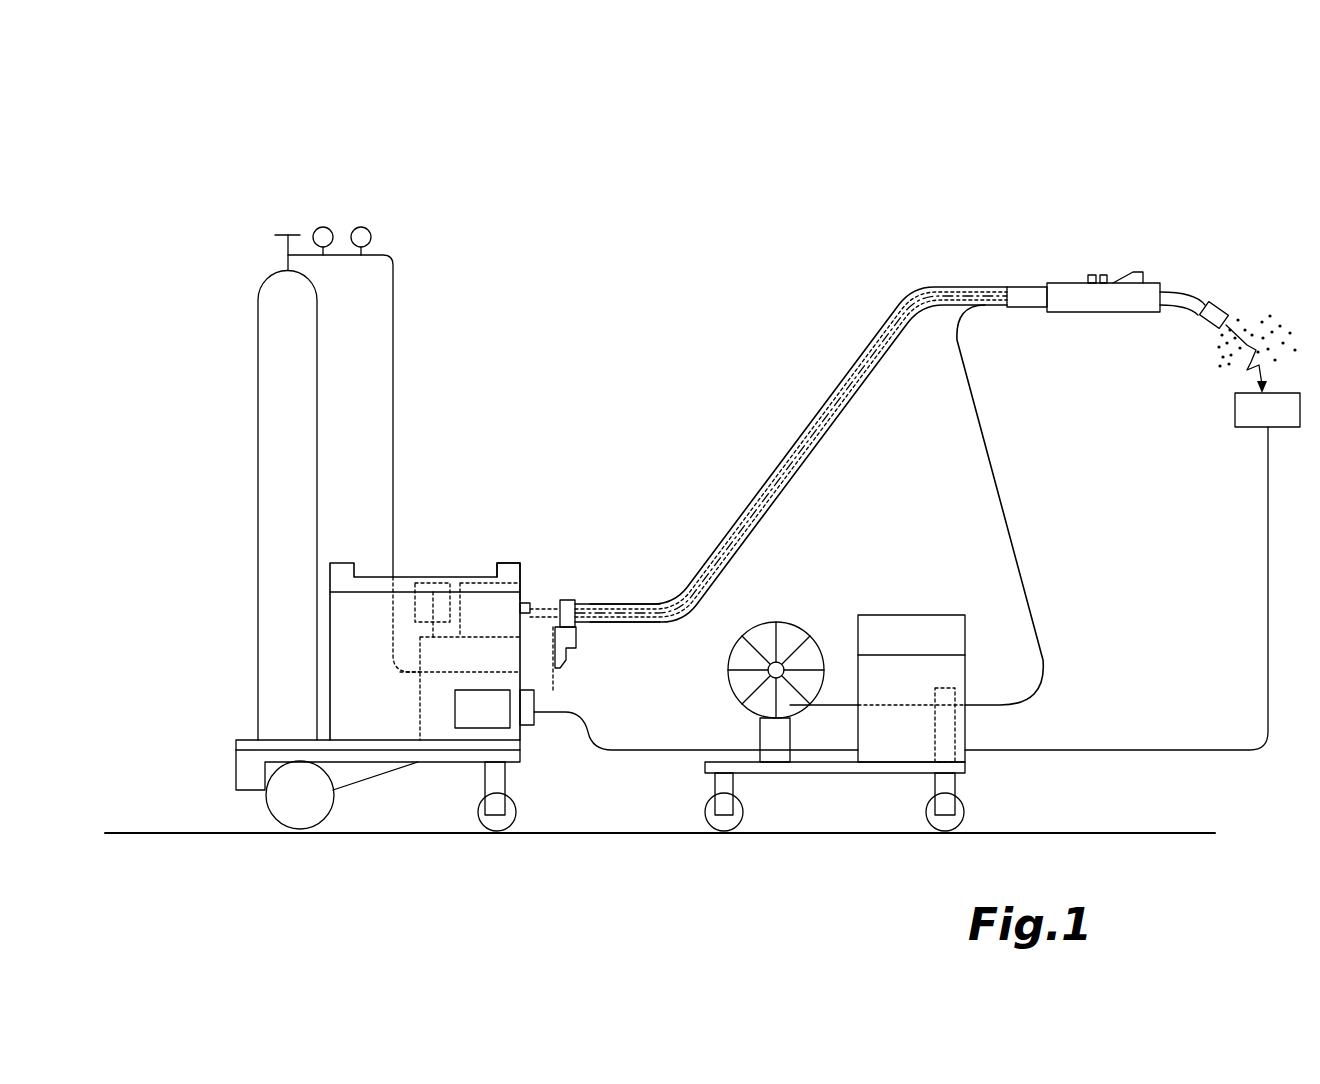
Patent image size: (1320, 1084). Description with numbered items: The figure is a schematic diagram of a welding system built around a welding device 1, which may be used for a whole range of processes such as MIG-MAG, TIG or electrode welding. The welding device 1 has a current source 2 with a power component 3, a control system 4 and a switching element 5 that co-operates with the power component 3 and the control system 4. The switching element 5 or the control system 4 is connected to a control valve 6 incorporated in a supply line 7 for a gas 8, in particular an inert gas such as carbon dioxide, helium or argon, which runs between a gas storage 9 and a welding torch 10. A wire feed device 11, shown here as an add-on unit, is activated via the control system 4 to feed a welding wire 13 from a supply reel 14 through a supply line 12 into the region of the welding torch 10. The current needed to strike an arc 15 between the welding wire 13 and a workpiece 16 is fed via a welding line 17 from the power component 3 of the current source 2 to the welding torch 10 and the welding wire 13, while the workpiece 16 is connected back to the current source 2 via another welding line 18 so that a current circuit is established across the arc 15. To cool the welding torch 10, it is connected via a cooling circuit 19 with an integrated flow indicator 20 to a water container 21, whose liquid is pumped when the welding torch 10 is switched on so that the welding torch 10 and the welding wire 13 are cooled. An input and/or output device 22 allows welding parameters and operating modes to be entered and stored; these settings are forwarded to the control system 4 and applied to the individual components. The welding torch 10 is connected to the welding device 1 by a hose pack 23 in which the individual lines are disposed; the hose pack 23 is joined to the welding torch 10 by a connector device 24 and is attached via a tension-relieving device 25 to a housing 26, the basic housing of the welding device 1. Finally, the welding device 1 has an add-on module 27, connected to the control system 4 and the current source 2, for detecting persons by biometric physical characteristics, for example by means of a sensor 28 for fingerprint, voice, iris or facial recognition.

The welding device 1 is at (192, 217).
The current source 2 is at (362, 603).
The power component 3 is at (473, 715).
The control system 4 is at (421, 705).
The switching element 5 is at (536, 740).
The control valve 6 is at (542, 697).
The supply line 7 is at (936, 302).
The gas 8 is at (1237, 294).
The gas storage 9 is at (283, 348).
The welding torch 10 is at (1150, 253).
The wire feed device 11 is at (942, 662).
The supply line 12 is at (1010, 525).
The welding wire 13 is at (1247, 333).
The supply reel 14 is at (787, 625).
The arc 15 is at (1240, 377).
The workpiece 16 is at (1275, 410).
The welding line 17 is at (867, 348).
The welding line 18 is at (1268, 600).
The cooling circuit 19 is at (727, 538).
The flow indicator 20 is at (531, 605).
The water container 21 is at (480, 578).
The input and/or output device 22 is at (515, 578).
The hose pack 23 is at (632, 612).
The connector device 24 is at (1023, 297).
The tension-relieving device 25 is at (570, 602).
The housing 26 is at (574, 640).
The add-on module 27 is at (425, 578).
The sensor 28 is at (443, 583).